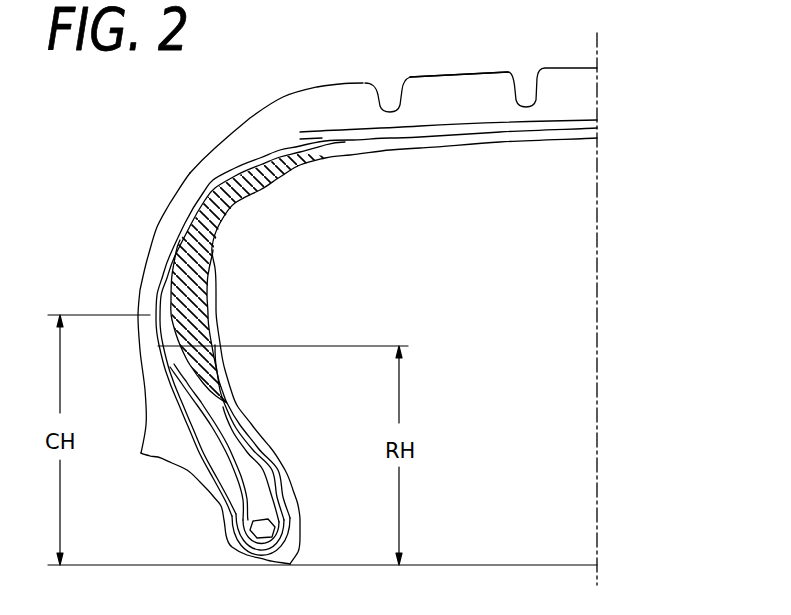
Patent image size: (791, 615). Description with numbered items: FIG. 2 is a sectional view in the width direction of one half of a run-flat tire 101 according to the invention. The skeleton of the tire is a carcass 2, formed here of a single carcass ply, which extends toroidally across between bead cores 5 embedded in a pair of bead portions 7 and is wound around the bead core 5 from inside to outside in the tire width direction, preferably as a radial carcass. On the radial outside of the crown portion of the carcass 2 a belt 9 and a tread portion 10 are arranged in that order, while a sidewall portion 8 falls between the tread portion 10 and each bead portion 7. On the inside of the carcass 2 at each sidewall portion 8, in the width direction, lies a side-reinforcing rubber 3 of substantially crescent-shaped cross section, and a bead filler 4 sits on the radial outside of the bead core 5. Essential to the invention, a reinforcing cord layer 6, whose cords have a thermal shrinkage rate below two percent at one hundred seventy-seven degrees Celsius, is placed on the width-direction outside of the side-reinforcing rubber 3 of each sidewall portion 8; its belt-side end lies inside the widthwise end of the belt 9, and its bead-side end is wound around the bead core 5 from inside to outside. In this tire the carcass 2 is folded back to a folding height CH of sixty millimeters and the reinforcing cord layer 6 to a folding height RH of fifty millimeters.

The run-flat tire 101 is at (623, 70).
The carcass 2 is at (350, 137).
The tread portion 10 is at (457, 88).
The belt 9 is at (487, 123).
The reinforcing cord layer 6 is at (202, 193).
The sidewall portion 8 is at (162, 248).
The side-reinforcing rubber 3 is at (214, 247).
The bead filler 4 is at (233, 471).
The bead core 5 is at (264, 527).
The bead portion 7 is at (197, 465).